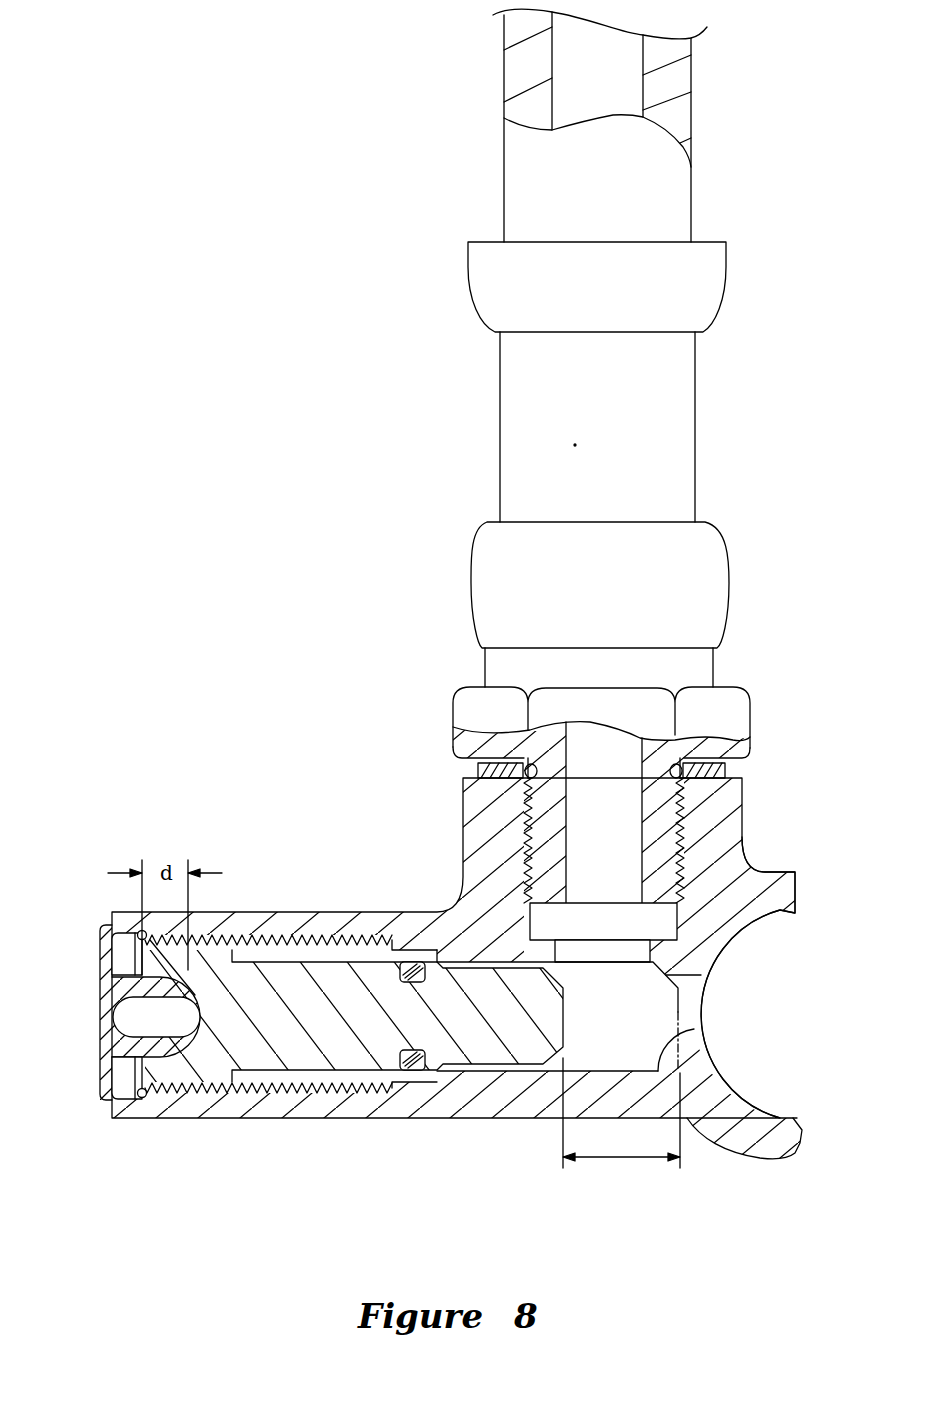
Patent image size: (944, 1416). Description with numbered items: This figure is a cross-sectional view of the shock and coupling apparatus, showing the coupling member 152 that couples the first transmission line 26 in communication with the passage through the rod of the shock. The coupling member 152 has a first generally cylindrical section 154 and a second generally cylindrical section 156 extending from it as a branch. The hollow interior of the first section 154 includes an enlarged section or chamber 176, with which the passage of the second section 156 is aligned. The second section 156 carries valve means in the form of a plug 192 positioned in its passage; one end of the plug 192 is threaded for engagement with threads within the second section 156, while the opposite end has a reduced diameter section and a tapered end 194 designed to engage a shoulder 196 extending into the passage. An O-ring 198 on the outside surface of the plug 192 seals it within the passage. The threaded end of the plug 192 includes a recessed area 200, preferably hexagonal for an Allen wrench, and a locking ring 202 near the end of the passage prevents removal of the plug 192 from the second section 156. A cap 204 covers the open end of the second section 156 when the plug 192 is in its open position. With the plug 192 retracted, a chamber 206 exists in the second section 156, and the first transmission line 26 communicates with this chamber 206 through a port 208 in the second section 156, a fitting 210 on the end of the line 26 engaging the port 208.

The first transmission line 26 is at (504, 66).
The fitting 210 is at (683, 408).
The coupling member 152 is at (370, 834).
The second generally cylindrical section 156 is at (303, 922).
The enlarged section or chamber 176 is at (728, 925).
The first generally cylindrical section 154 is at (735, 1130).
The port 208 is at (633, 956).
The chamber 206 is at (640, 1014).
The shoulder 196 is at (699, 1033).
The plug 192 is at (317, 1058).
The cap 204 is at (100, 1012).
The recessed area 200 is at (193, 1023).
The locking ring 202 is at (142, 1099).
The O-ring 198 is at (418, 1075).
The tapered end 194 is at (585, 1118).